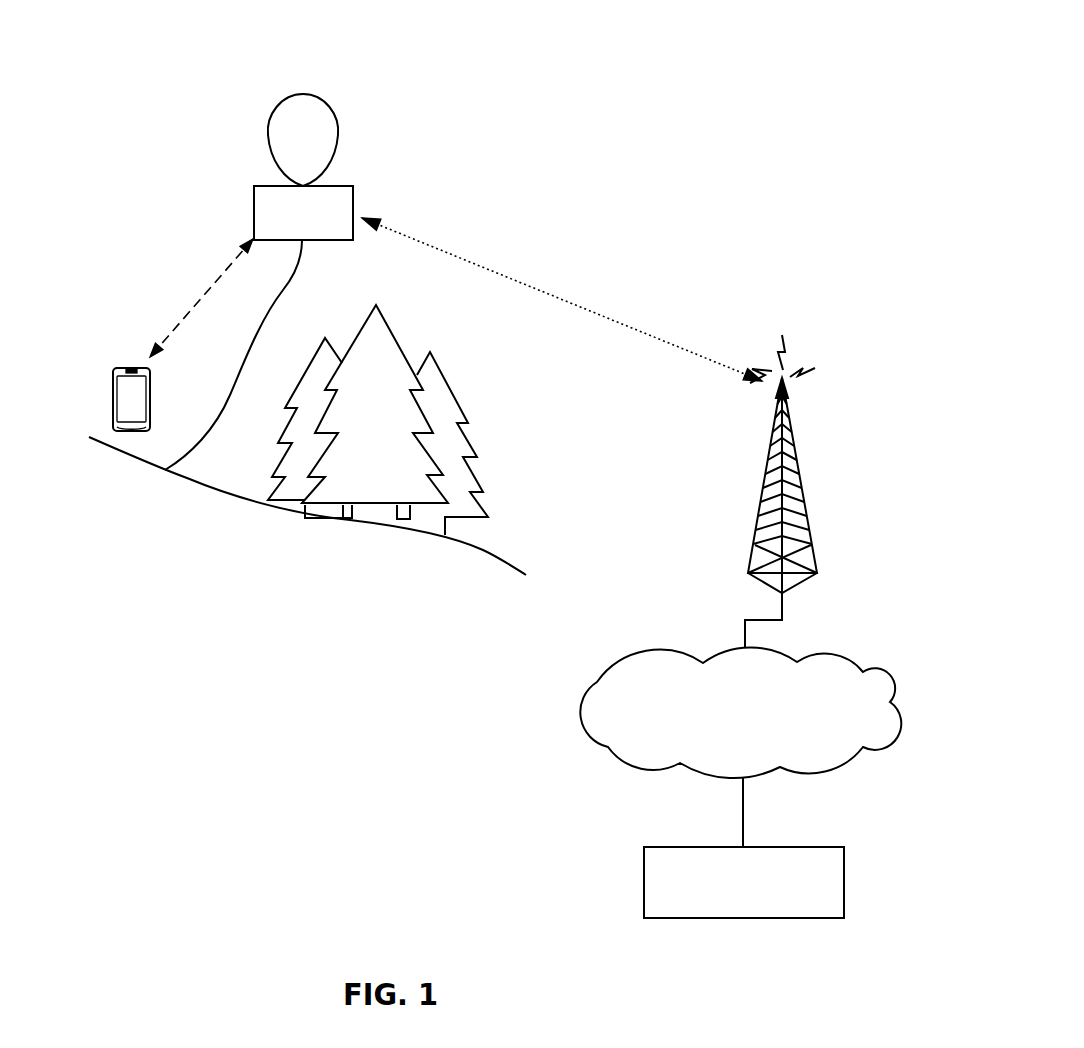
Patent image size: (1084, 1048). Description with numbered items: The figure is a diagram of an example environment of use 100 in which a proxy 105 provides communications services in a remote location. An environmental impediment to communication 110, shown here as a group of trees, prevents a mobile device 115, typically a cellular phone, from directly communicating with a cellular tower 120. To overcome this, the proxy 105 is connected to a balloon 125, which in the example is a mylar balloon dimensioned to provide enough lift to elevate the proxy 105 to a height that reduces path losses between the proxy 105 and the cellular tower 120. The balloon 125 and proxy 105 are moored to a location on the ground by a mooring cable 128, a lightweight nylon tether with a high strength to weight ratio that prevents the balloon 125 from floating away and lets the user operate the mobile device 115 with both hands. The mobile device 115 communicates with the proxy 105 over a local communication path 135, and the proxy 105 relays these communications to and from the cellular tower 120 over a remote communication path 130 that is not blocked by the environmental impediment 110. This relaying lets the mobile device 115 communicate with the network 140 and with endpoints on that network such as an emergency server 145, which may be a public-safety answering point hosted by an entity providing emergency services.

The environment of use 100 is at (720, 95).
The proxy 105 is at (345, 186).
The environmental impediment to communication 110 is at (470, 453).
The mobile device 115 is at (128, 367).
The cellular tower 120 is at (800, 470).
The balloon 125 is at (310, 93).
The mooring cable 128 is at (281, 284).
The remote communication path 130 is at (505, 278).
The local communication path 135 is at (214, 288).
The network 140 is at (824, 654).
The emergency server 145 is at (795, 847).